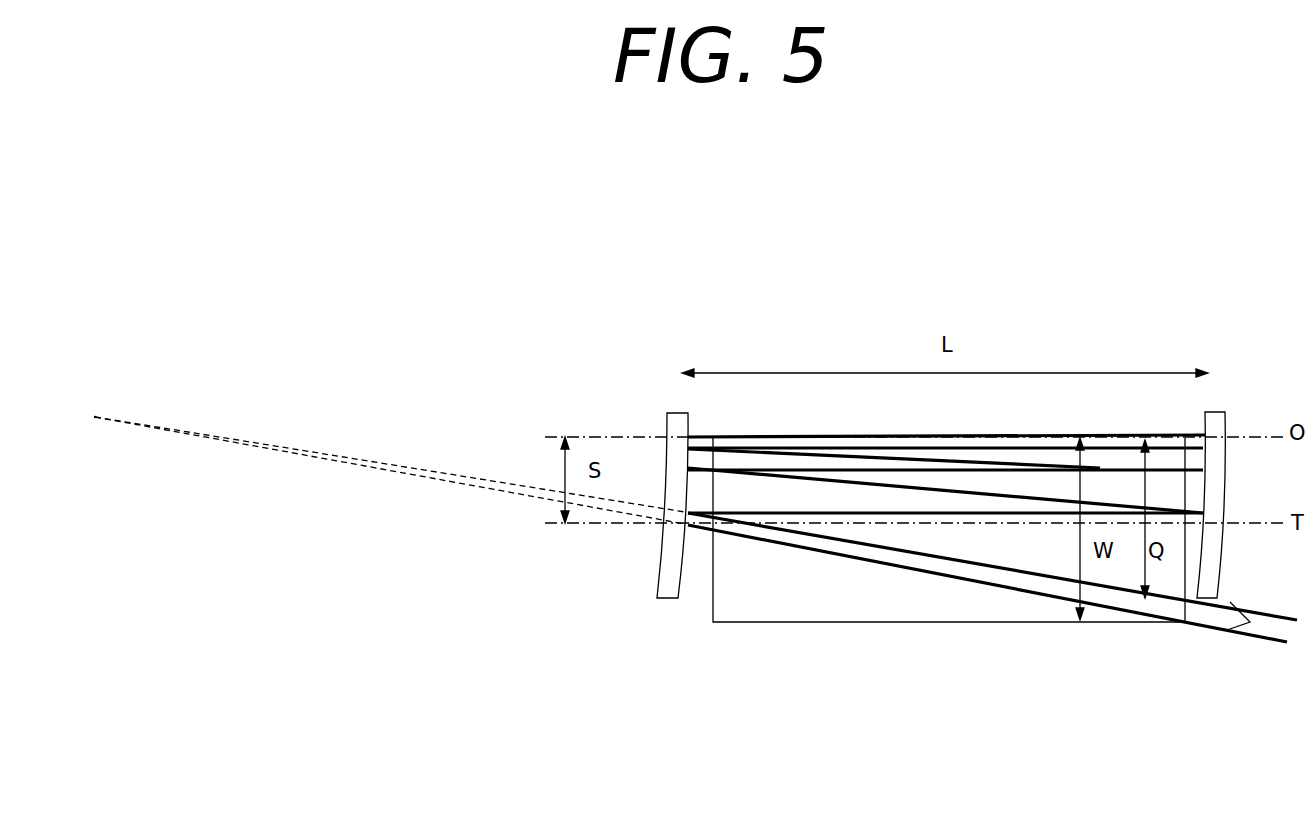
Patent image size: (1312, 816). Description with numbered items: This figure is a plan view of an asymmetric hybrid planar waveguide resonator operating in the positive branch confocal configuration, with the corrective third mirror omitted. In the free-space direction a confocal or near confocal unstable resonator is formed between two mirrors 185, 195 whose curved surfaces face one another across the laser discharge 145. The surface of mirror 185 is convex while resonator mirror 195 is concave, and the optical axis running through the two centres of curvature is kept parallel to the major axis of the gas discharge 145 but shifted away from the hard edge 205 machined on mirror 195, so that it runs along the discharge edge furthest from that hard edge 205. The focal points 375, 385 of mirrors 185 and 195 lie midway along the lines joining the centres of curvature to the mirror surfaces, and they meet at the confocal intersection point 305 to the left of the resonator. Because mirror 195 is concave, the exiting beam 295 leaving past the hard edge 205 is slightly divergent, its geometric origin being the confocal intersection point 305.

The confocal intersection point 305 is at (95, 417).
The focal point of mirror 195 385 is at (95, 417).
The focal point of mirror 185 375 is at (95, 417).
The resonator mirror 185 is at (660, 568).
The resonator mirror 195 is at (1225, 418).
The laser discharge 145 is at (748, 578).
The hard edge 205 is at (1200, 598).
The exiting beam 295 is at (1273, 645).